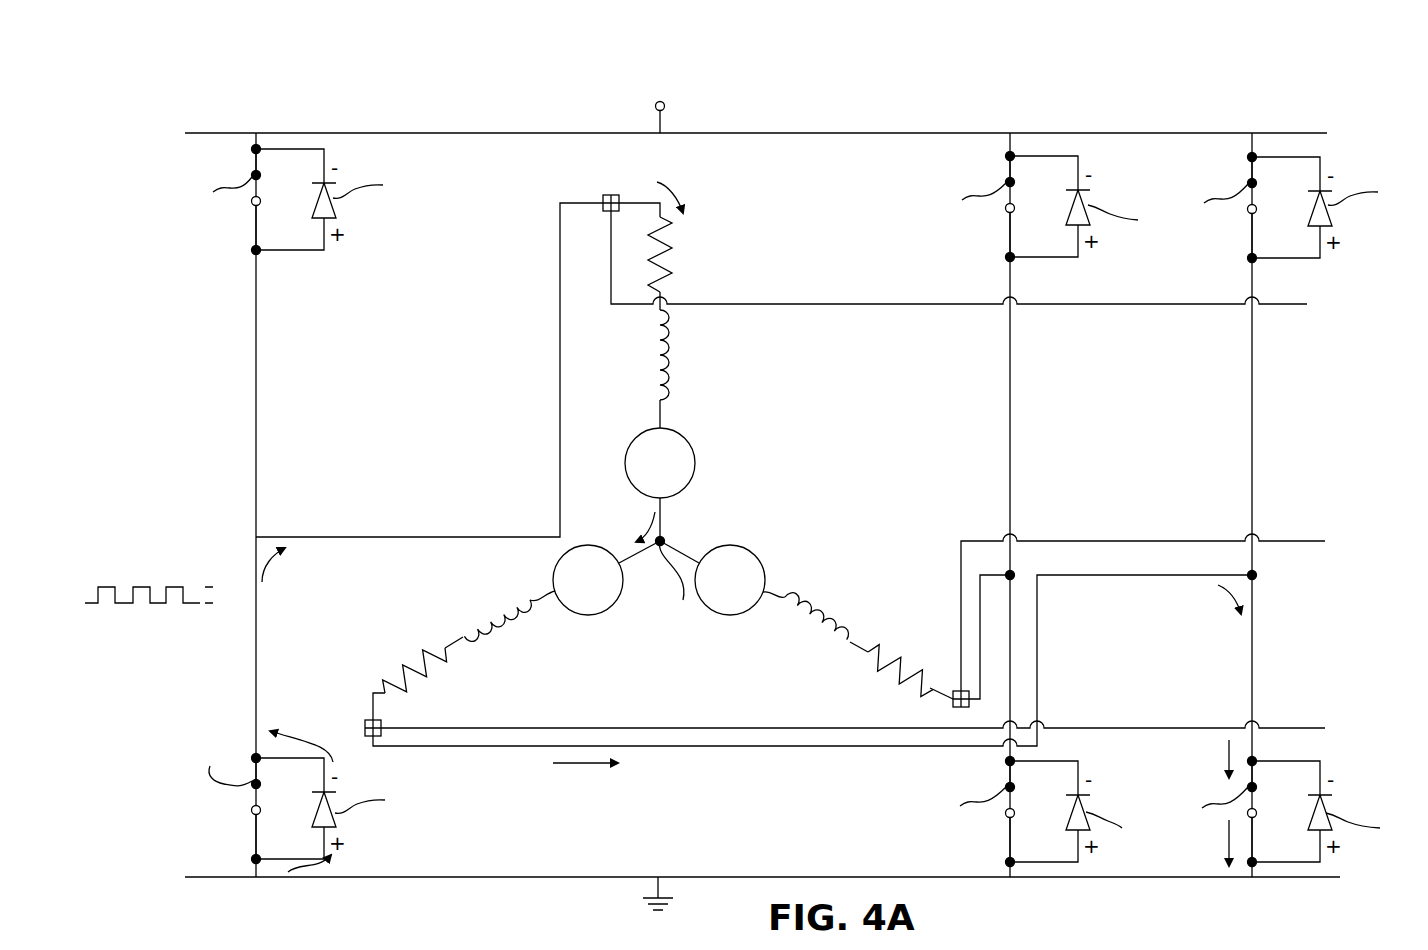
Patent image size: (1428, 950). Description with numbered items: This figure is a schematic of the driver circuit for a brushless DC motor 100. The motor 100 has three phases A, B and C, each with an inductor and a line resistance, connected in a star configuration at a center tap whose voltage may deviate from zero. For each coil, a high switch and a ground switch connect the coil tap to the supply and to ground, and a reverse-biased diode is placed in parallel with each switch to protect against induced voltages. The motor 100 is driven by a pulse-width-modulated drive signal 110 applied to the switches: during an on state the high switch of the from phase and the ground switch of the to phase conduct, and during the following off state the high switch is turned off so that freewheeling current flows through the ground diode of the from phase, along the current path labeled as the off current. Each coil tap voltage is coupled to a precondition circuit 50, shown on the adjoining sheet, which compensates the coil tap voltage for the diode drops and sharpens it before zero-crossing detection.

The brushless DC motor 100 is at (980, 114).
The PWM signal 110 is at (150, 556).
The precondition circuit 50 is at (1342, 531).